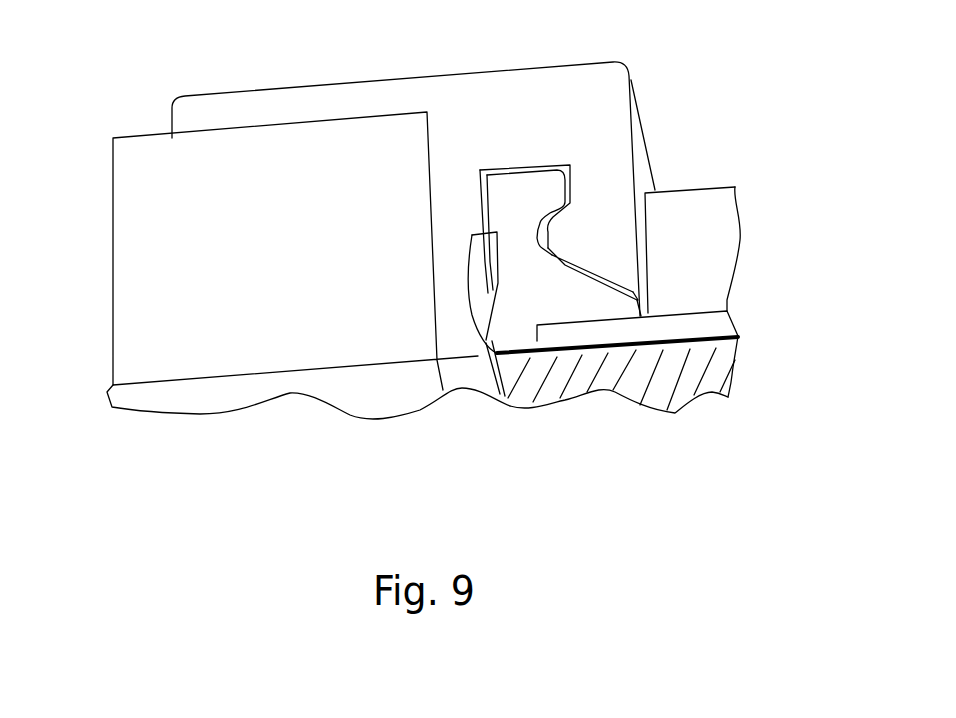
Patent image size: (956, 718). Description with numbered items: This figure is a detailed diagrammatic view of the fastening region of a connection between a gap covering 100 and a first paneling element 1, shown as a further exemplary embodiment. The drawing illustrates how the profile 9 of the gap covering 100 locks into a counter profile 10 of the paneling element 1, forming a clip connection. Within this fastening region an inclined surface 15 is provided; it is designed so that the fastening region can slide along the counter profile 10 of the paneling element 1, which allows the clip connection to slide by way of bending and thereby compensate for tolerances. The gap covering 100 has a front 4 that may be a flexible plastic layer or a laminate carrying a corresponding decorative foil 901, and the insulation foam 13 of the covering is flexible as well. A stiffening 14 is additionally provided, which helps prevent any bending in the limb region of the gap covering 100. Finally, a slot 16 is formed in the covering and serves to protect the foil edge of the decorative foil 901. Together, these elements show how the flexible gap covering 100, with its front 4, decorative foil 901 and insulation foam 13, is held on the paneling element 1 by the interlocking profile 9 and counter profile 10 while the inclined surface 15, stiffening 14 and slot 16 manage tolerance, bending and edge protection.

The first paneling element 1 is at (137, 283).
The counter profile 10 is at (610, 100).
The insulation foam 13 is at (694, 204).
The gap covering 100 is at (757, 323).
The front 4 is at (683, 390).
The slot 16 is at (497, 256).
The profile 9 is at (483, 330).
The stiffening 14 is at (523, 310).
The inclined surface 15 is at (577, 265).
The decorative foil 901 is at (641, 378).